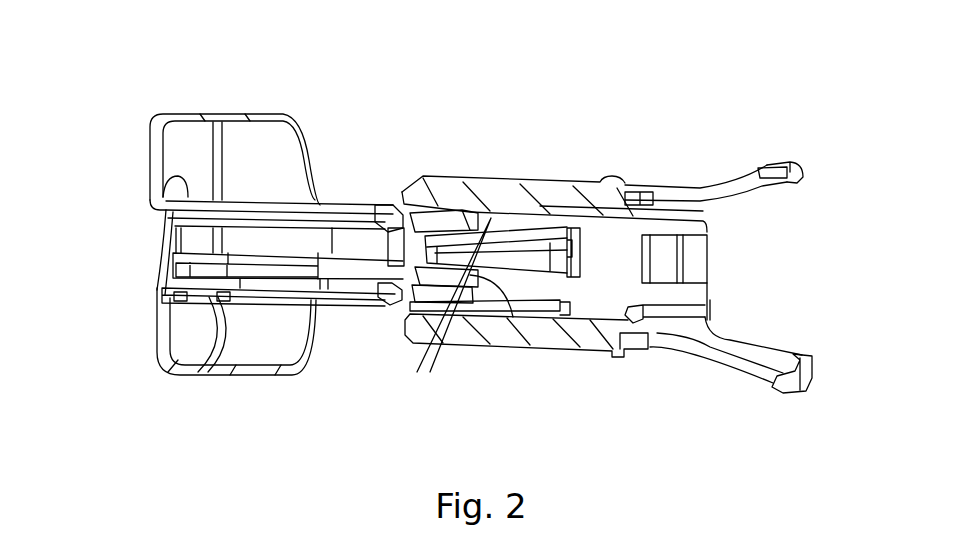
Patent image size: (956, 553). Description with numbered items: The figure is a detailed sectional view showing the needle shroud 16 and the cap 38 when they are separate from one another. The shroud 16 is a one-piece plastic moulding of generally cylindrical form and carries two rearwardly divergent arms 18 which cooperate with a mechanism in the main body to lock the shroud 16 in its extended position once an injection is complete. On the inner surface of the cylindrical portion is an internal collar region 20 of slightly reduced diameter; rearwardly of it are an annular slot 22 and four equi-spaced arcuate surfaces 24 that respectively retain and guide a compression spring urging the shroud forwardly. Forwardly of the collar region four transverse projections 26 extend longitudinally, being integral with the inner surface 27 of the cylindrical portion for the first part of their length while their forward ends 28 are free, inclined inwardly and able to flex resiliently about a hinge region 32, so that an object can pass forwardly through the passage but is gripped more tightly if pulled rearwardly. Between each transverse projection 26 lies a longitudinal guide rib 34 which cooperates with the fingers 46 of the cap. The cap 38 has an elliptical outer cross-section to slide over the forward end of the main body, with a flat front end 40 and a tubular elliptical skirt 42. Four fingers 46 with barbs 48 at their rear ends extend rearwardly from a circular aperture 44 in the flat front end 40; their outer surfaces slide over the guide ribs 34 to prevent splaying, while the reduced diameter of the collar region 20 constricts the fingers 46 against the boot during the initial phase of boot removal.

The shroud 16 is at (515, 165).
The rearwardly divergent arms 18 is at (765, 187).
The internal collar region 20 is at (572, 210).
The annular slot 22 is at (630, 337).
The arcuate surfaces 24 is at (697, 240).
The transverse projections 26 is at (441, 316).
The inner surface 27 is at (425, 305).
The forward ends 28 is at (428, 208).
The hinge region 32 is at (472, 206).
The longitudinal guide rib 34 is at (537, 250).
The cap 38 is at (213, 375).
The flat front end 40 is at (160, 170).
The tubular elliptical skirt 42 is at (232, 123).
The circular aperture 44 is at (165, 231).
The fingers 46 is at (227, 200).
The barbs 48 is at (387, 287).